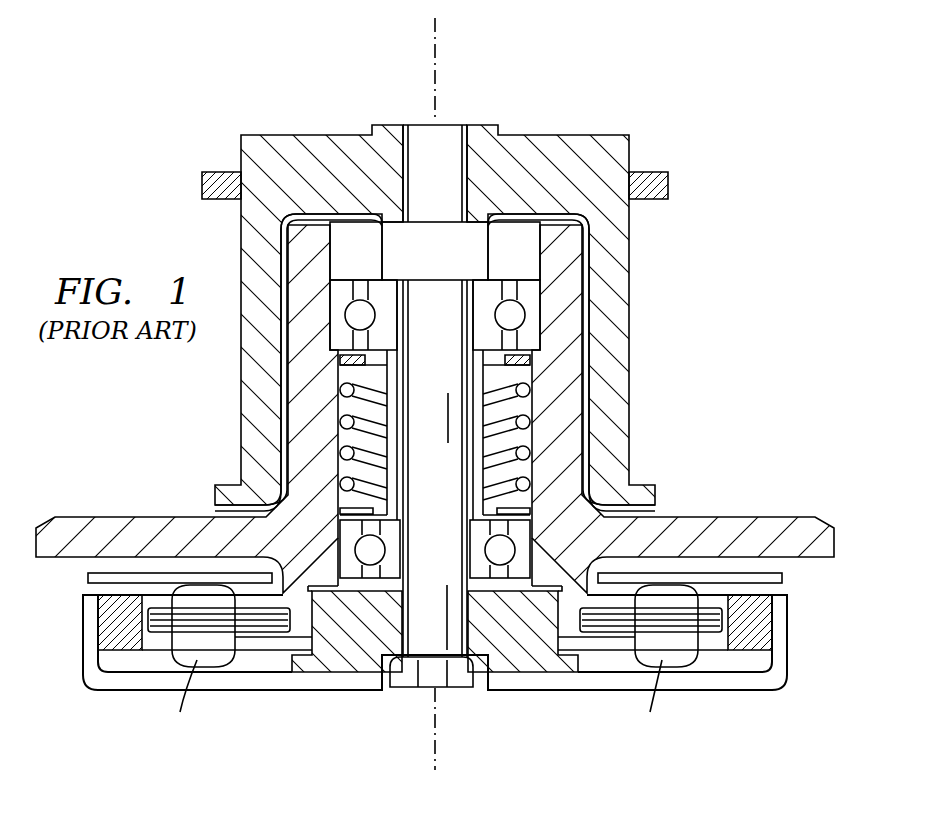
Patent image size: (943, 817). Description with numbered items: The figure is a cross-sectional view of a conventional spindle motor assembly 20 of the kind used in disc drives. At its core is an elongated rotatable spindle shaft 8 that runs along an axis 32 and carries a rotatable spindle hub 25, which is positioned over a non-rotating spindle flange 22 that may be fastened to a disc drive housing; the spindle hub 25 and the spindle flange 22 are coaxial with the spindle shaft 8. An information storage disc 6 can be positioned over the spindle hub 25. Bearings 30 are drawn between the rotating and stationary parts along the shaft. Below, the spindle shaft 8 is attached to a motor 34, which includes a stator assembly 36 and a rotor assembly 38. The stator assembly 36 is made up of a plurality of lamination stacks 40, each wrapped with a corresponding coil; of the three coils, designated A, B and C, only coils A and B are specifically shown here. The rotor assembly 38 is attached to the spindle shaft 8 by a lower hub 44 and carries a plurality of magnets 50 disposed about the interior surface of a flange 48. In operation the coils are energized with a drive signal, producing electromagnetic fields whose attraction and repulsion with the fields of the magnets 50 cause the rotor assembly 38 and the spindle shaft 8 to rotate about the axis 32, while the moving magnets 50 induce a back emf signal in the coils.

The information storage disc 6 is at (653, 175).
The spindle shaft 8 is at (426, 434).
The spindle motor assembly 20 is at (471, 408).
The spindle flange 22 is at (736, 528).
The spindle hub 25 is at (560, 145).
The bearing 30 is at (483, 549).
The axis 32 is at (436, 49).
The motor 34 is at (443, 664).
The stator assembly 36 is at (257, 651).
The rotor assembly 38 is at (698, 668).
The lamination stacks 40 is at (615, 622).
The lower hub 44 is at (347, 650).
The flange 48 is at (775, 633).
The magnets 50 is at (738, 645).